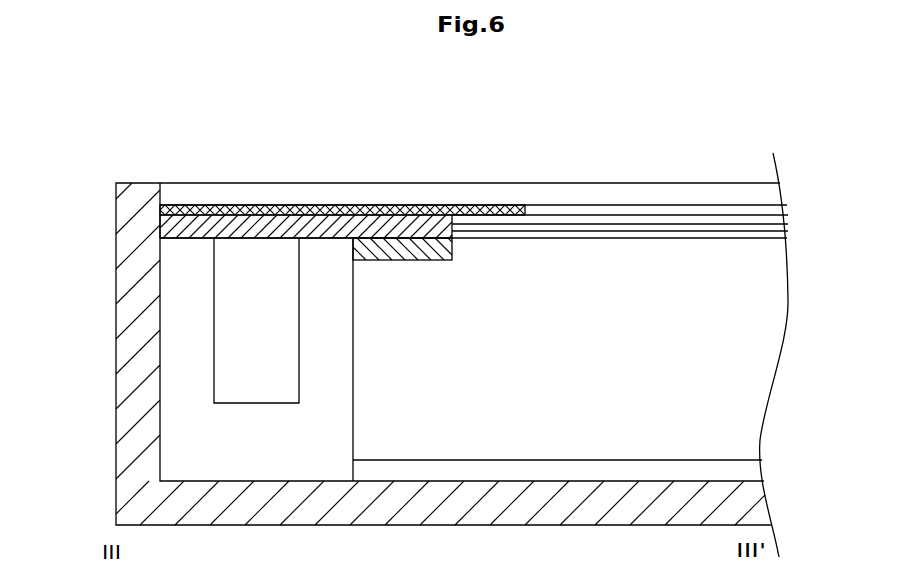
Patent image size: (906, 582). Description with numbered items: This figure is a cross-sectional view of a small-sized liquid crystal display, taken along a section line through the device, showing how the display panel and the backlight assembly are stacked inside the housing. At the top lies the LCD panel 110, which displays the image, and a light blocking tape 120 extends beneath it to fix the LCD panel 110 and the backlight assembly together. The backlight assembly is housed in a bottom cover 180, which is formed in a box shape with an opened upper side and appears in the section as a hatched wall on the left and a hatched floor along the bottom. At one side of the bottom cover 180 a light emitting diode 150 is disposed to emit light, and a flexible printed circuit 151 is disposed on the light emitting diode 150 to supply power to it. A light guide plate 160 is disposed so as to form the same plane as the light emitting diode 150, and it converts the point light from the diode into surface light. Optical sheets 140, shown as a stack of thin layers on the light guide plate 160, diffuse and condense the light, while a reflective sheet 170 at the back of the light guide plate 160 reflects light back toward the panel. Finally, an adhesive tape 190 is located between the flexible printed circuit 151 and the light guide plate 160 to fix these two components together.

The LCD panel 110 is at (406, 193).
The light blocking tape 120 is at (500, 210).
The optical sheets 140 is at (798, 207).
The light emitting diodes 150 is at (227, 285).
The flexible printed circuit 151 is at (238, 225).
The light guide plate 160 is at (753, 363).
The reflective sheet 170 is at (750, 472).
The bottom cover 180 is at (130, 378).
The adhesive tapes 190 is at (357, 250).